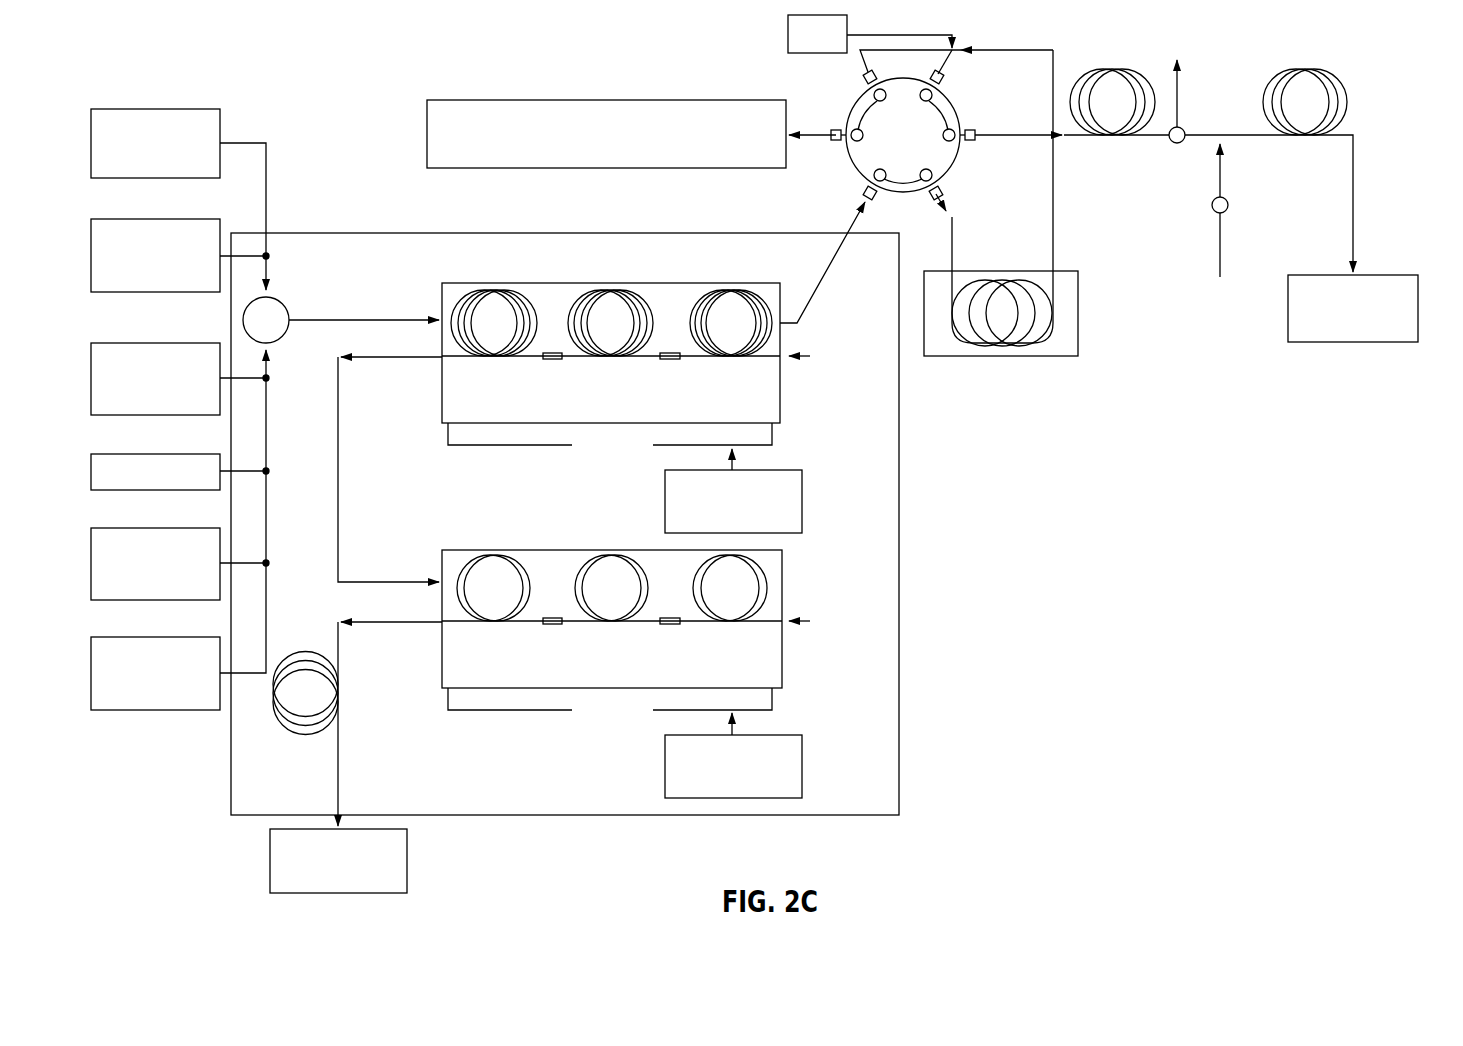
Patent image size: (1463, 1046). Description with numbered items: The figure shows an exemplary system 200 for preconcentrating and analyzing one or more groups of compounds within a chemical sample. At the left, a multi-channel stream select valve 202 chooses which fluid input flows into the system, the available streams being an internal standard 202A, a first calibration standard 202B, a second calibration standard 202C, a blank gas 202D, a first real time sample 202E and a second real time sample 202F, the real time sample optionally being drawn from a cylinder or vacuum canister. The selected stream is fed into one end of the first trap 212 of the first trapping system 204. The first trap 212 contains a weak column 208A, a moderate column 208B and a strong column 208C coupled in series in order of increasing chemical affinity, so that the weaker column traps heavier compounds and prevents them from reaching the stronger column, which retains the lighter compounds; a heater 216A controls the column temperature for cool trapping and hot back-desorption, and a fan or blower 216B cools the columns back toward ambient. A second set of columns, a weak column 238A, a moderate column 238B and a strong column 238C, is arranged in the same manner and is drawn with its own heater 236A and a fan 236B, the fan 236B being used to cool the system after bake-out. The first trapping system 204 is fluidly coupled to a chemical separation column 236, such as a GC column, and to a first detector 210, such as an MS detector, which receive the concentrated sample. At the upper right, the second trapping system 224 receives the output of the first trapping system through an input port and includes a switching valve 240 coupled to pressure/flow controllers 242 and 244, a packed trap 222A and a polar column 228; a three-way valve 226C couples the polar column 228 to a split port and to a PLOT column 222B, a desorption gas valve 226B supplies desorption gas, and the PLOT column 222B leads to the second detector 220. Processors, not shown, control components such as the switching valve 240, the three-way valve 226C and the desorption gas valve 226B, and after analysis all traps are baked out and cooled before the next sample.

The system 200 is at (326, 54).
The stream select valve 202 is at (282, 299).
The internal standard 202A is at (173, 108).
The first calibration standard 202B is at (173, 218).
The second calibration standard 202C is at (173, 342).
The blank gas 202D is at (173, 453).
The first real-time sample 202E is at (173, 527).
The second real-time sample 202F is at (173, 636).
The first trapping system 204 is at (910, 723).
The weak column 208A is at (531, 294).
The moderate column 208B is at (646, 294).
The strong column 208C is at (765, 294).
The first detector 210 is at (270, 860).
The first multi-capillary column trap 212 is at (626, 330).
The heater 216A is at (569, 456).
The fan or blower 216B is at (804, 503).
The second detector 220 is at (1385, 275).
The packed trap 222A is at (995, 357).
The PLOT column 222B is at (1186, 85).
The second trapping system 224 is at (1192, 216).
The desorption gas valve 226B is at (1233, 204).
The 3-way valve 226C is at (1177, 152).
The polar column 228 is at (1112, 143).
The chemical separation column 236 is at (321, 738).
The focusing column heater 236A is at (661, 616).
The fan 236B is at (807, 765).
The weak column 238A is at (521, 561).
The moderate column 238B is at (639, 561).
The strong column 238C is at (770, 576).
The switching valve 240 is at (892, 135).
The pressure/flow controller 242 is at (492, 100).
The pressure control system 244 is at (785, 36).